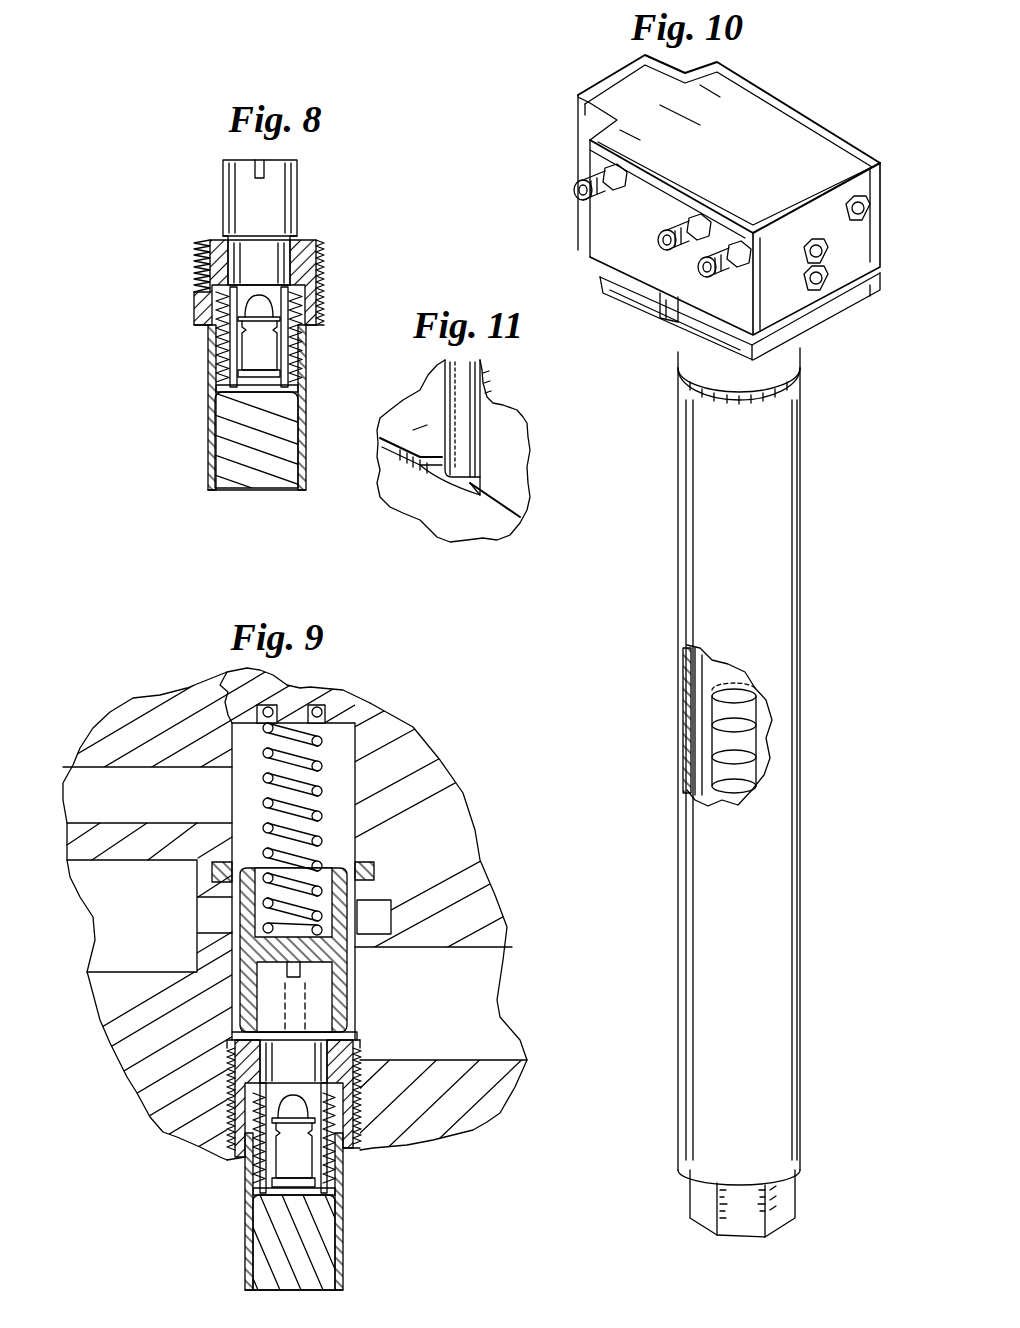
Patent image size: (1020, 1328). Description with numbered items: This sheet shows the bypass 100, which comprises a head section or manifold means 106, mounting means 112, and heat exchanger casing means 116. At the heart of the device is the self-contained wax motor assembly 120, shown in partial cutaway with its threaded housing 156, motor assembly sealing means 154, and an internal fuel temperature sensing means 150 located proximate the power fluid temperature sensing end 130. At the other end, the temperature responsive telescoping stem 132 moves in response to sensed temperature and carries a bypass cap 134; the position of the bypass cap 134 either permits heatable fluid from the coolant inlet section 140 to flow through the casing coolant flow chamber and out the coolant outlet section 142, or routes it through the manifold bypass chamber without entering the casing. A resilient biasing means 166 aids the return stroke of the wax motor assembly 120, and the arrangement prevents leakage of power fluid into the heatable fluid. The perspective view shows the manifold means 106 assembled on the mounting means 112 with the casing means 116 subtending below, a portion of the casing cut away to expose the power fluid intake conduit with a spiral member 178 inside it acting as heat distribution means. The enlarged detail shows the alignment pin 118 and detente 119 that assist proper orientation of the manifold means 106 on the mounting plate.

In FIG. 10, the bypass 100 is at (730, 646).
In FIG. 10, the manifold means 106 is at (817, 120).
In FIG. 9, the manifold means 106 is at (448, 772).
In FIG. 10, the mounting means 112 is at (885, 275).
In FIG. 10, the heat exchanger casing means 116 is at (800, 595).
In FIG. 11, the alignment pin 118 is at (460, 412).
In FIG. 10, the alignment pin 118 is at (660, 298).
In FIG. 11, the detente 119 is at (477, 477).
In FIG. 8, the self-contained wax motor assembly 120 is at (208, 410).
In FIG. 9, the self-contained wax motor assembly 120 is at (294, 1211).
In FIG. 8, the power fluid temperature sensing end 130 is at (268, 490).
In FIG. 9, the power fluid temperature sensing end 130 is at (327, 1290).
In FIG. 8, the telescoping stem 132 is at (297, 186).
In FIG. 9, the telescoping stem 132 is at (330, 990).
In FIG. 9, the bypass cap 134 is at (340, 890).
In FIG. 10, the coolant inlet section 140 is at (580, 193).
In FIG. 10, the coolant outlet section 142 is at (697, 283).
In FIG. 8, the fuel temperature sensing means 150 is at (260, 350).
In FIG. 9, the fuel temperature sensing means 150 is at (307, 1155).
In FIG. 8, the motor assembly sealing means 154 is at (308, 310).
In FIG. 9, the motor assembly sealing means 154 is at (247, 1177).
In FIG. 8, the threaded housing 156 is at (324, 262).
In FIG. 9, the threaded housing 156 is at (294, 1096).
In FIG. 9, the resilient biasing means 166 is at (357, 737).
In FIG. 10, the spiral member 178 is at (748, 745).